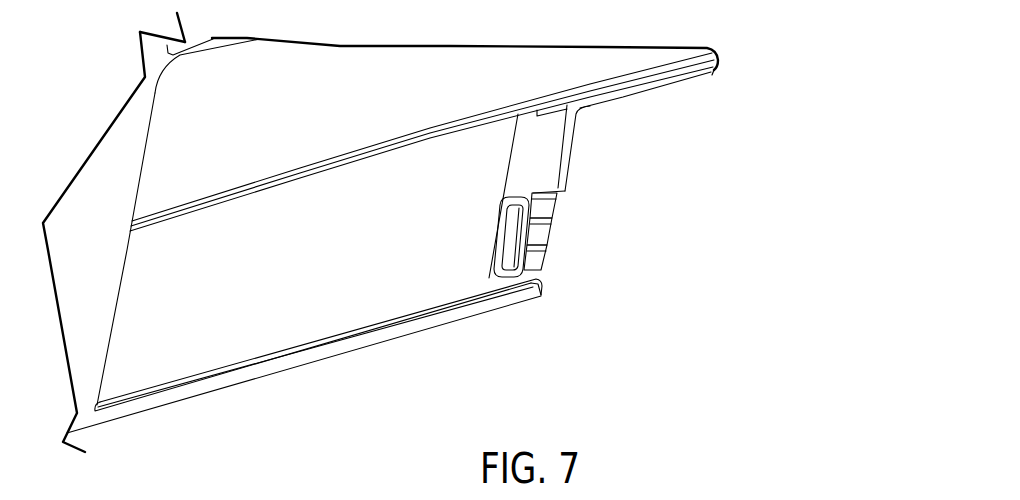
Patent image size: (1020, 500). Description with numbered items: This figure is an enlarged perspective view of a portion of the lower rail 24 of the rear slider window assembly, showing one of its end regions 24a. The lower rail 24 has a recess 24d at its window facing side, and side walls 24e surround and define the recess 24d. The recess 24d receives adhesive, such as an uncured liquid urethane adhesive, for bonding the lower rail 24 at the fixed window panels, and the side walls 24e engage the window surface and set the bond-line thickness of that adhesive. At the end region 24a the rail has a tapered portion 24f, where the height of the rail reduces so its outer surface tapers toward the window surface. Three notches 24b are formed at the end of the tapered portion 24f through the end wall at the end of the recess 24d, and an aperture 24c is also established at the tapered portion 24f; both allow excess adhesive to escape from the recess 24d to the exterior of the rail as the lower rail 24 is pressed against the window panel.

The lower rail 24 is at (300, 384).
The end region 24a is at (568, 297).
The notches 24b is at (530, 268).
The aperture 24c is at (498, 257).
The recess 24d is at (238, 335).
The side walls 24e is at (352, 337).
The tapered portion 24f is at (532, 150).